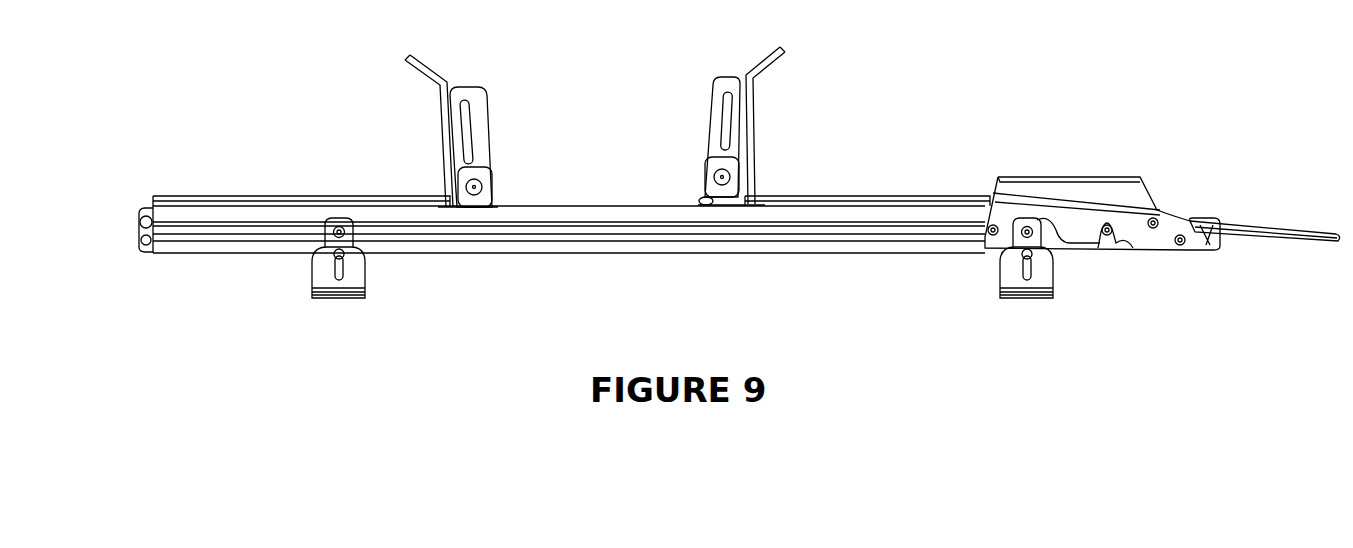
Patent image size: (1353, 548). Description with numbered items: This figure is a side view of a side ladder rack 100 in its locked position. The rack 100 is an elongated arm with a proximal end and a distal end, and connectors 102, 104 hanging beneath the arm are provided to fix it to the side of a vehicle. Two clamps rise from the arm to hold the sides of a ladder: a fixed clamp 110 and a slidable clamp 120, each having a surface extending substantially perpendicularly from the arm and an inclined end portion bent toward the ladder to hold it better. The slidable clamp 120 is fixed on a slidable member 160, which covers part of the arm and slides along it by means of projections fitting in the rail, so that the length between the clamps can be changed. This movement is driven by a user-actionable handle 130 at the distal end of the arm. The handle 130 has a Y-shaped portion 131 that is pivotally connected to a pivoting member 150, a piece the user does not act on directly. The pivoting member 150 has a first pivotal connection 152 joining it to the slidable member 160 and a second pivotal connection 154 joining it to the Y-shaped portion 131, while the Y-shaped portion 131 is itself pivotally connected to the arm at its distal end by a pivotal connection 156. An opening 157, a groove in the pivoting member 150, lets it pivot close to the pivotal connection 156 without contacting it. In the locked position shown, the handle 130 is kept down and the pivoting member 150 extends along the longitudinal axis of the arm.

The rack 100 is at (207, 254).
The connector 102 is at (317, 277).
The connector 104 is at (1010, 272).
The fixed clamp 110 is at (440, 140).
The slidable clamp 120 is at (757, 137).
The handle 130 is at (1283, 227).
The Y-shaped portion 131 is at (1200, 240).
The pivoting member 150 is at (1055, 178).
The first pivotal connection 152 is at (985, 245).
The second pivotal connection 154 is at (1175, 253).
The pivotal connection 156 is at (1098, 253).
The opening 157 is at (1130, 245).
The slidable member 160 is at (893, 197).